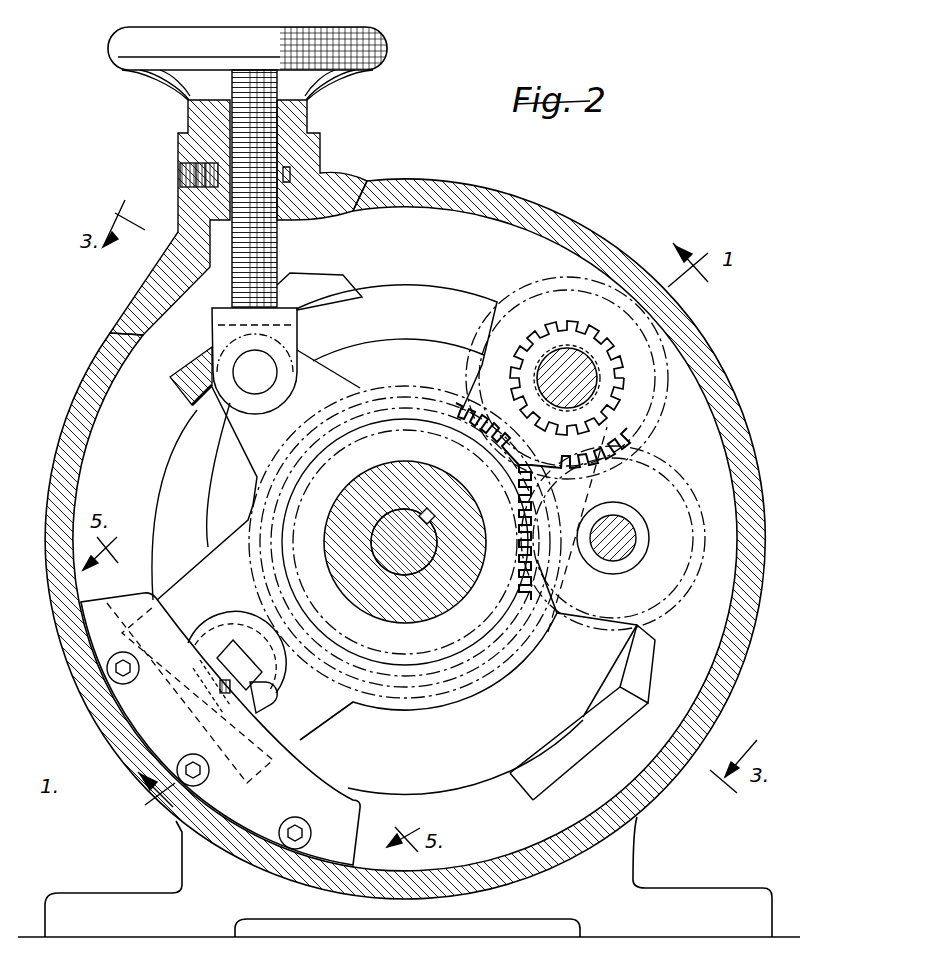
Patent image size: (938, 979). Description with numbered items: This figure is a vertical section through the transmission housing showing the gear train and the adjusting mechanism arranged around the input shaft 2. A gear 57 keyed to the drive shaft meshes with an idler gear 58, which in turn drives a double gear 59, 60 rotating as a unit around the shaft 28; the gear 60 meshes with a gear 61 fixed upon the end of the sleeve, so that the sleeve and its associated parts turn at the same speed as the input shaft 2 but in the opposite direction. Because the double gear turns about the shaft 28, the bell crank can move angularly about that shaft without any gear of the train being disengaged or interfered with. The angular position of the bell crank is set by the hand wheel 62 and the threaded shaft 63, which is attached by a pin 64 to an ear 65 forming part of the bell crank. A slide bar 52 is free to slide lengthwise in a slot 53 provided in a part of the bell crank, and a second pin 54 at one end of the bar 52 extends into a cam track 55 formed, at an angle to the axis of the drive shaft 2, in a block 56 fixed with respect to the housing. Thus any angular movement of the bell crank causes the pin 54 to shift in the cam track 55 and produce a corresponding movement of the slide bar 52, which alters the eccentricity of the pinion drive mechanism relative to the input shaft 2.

The input shaft 2 is at (418, 567).
The shaft 28 is at (557, 350).
The slide bar 52 is at (250, 668).
The slot 53 is at (245, 645).
The second pin 54 is at (262, 700).
The cam track 55 is at (78, 640).
The block 56 is at (143, 713).
The gear 57 is at (498, 573).
The idler gear 58 is at (647, 588).
The double gear 59 is at (620, 432).
The double gear 60 is at (500, 355).
The gear 61 is at (423, 410).
The hand wheel 62 is at (385, 52).
The threaded shaft 63 is at (276, 262).
The pin 64 is at (245, 385).
The ear 65 is at (320, 377).